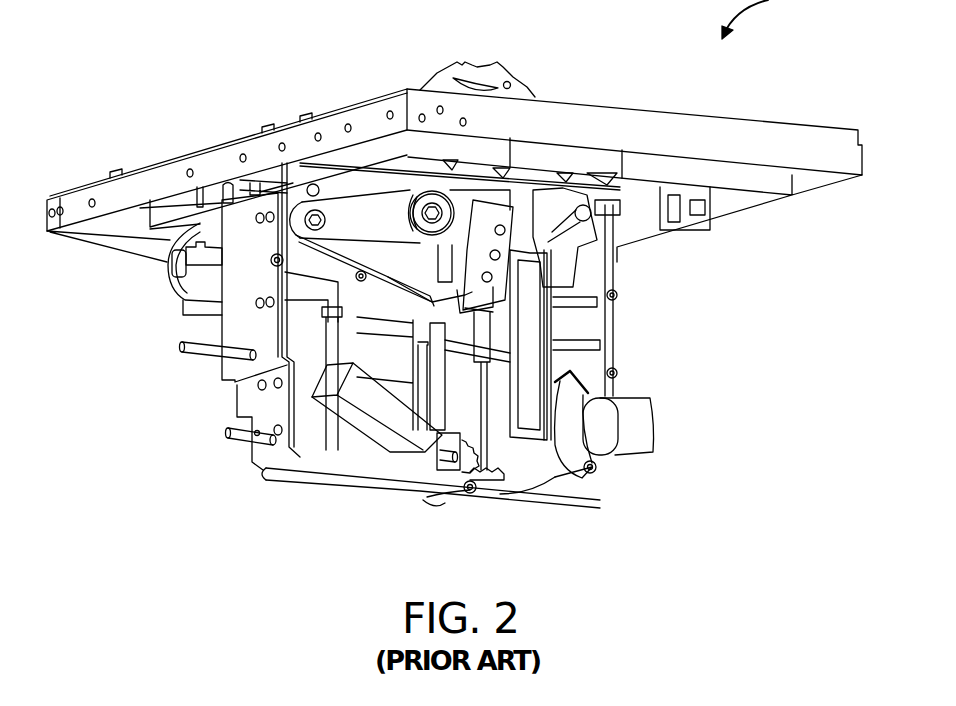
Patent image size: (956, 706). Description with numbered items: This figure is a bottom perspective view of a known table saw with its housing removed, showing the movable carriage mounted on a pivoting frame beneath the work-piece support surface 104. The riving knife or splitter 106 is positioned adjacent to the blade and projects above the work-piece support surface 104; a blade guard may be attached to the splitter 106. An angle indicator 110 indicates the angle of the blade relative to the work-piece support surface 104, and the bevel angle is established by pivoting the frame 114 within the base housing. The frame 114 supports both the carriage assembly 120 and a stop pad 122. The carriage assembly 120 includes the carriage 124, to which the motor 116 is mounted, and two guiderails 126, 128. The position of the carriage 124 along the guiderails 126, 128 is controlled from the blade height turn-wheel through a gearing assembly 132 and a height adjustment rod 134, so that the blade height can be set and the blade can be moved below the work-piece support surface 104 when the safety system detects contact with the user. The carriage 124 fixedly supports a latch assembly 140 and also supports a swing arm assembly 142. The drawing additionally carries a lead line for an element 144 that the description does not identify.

The work-piece support surface 104 is at (773, 123).
The riving knife or splitter 106 is at (447, 67).
The angle indicator 110 is at (180, 355).
The frame 114 is at (257, 460).
The motor 116 is at (167, 273).
The carriage assembly 120 is at (293, 318).
The stop pad 122 is at (403, 306).
The carriage 124 is at (372, 277).
The guiderail 126 is at (233, 388).
The guiderail 128 is at (450, 362).
The gearing assembly 132 is at (491, 495).
The height adjustment rod 134 is at (520, 488).
The latch assembly 140 is at (573, 287).
The swing arm assembly 142 is at (335, 352).
The arbor arm 144 is at (369, 250).